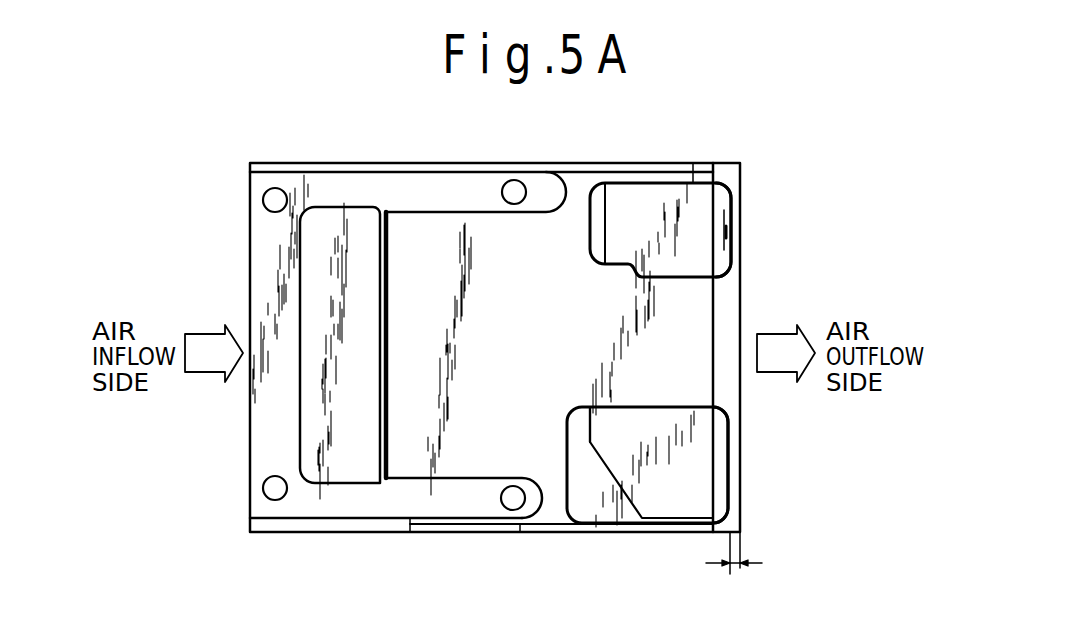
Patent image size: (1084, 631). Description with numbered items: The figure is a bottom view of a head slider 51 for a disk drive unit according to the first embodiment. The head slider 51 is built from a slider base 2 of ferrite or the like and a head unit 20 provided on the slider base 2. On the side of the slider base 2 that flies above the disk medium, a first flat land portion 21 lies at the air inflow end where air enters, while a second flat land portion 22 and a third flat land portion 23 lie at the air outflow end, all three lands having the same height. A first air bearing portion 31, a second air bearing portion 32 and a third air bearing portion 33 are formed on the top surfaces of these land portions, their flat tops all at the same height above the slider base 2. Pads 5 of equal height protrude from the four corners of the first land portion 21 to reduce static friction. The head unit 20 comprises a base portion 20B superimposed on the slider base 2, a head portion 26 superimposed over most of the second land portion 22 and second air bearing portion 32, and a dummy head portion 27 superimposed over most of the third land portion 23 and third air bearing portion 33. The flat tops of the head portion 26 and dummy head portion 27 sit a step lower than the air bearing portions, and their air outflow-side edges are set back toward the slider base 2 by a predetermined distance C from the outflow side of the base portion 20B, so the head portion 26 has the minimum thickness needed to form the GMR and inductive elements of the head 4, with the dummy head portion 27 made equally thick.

The head slider 51 is at (233, 219).
The head unit 20 is at (731, 161).
The base portion 20B is at (735, 318).
The slider base 2 is at (603, 164).
The first flat land portion 21 is at (388, 254).
The first air bearing portion 31 is at (362, 330).
The pads 5 is at (278, 198).
The second flat land portion 22 is at (598, 222).
The second air bearing portion 32 is at (648, 253).
The head 4 is at (737, 201).
The head portion 26 is at (728, 248).
The third flat land portion 23 is at (578, 430).
The third air bearing portion 33 is at (613, 414).
The dummy head portion 27 is at (722, 466).
The predetermined distance C is at (730, 574).